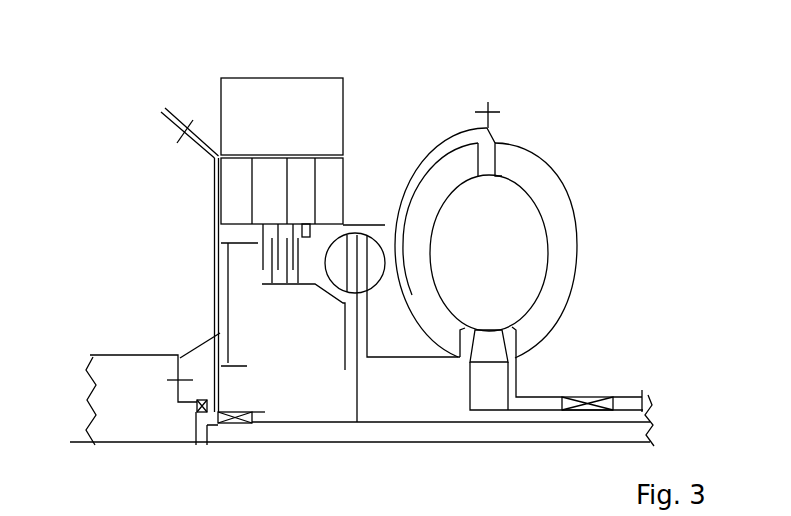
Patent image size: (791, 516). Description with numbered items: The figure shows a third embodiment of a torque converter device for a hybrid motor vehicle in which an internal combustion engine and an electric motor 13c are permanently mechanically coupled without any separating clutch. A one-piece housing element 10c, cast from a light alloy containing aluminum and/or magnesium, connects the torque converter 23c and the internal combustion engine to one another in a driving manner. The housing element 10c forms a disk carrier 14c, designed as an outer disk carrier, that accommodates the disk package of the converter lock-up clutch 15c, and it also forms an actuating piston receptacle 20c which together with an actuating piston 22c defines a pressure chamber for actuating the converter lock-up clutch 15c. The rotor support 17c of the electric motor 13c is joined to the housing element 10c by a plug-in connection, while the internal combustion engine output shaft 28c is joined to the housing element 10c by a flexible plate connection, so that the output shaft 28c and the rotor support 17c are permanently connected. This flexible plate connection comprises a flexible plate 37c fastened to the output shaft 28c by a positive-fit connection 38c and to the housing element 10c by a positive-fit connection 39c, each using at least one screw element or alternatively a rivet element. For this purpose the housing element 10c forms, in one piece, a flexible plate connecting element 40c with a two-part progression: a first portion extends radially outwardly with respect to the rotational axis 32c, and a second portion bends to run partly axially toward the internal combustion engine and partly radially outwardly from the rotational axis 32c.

The housing element 10c is at (385, 225).
The electric motor 13c is at (203, 95).
The disk carrier 14c is at (297, 223).
The converter lock-up clutch 15c is at (306, 300).
The rotor support 17c is at (247, 222).
The actuating piston receptacle 20c is at (220, 355).
The actuating piston 22c is at (233, 323).
The torque converter 23c is at (551, 124).
The internal combustion engine output shaft 28c is at (112, 402).
The rotational axis 32c is at (558, 445).
The flexible plate 37c is at (217, 335).
The positive-fit connection 38c is at (163, 399).
The positive-fit connection 39c is at (168, 137).
The flexible plate connecting element 40c is at (196, 137).